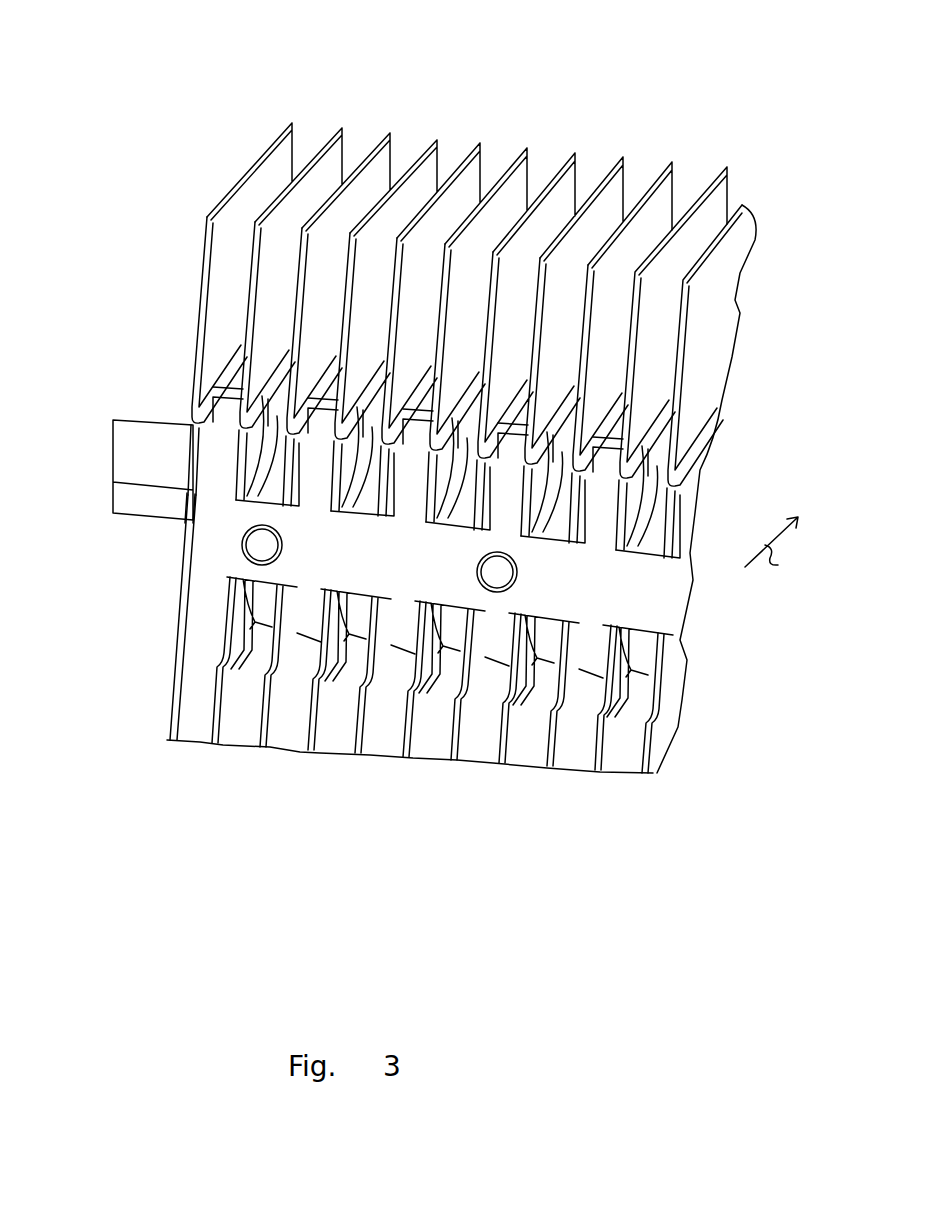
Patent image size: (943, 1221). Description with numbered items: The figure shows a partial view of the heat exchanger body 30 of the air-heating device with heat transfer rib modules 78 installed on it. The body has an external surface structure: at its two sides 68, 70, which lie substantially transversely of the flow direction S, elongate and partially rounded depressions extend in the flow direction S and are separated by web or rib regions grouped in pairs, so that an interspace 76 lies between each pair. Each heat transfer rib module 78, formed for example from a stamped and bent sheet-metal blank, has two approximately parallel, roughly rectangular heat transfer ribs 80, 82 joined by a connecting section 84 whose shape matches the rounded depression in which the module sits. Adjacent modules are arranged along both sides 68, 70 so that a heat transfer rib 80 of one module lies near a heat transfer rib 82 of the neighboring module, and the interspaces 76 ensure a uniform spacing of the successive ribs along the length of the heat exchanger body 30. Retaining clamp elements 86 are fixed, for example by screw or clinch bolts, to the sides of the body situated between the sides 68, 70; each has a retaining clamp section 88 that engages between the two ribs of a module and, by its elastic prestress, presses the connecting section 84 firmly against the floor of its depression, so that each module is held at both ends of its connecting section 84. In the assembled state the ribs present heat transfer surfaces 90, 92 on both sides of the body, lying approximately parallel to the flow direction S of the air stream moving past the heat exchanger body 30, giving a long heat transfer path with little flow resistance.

The heat exchanger body 30 is at (248, 503).
The side of the heat exchanger body 68 is at (761, 382).
The side of the heat exchanger body 70 is at (723, 745).
The interspace 76 is at (258, 522).
The heat transfer rib module 78 is at (221, 318).
The heat transfer rib 80 is at (232, 185).
The heat transfer rib 82 is at (342, 127).
The connecting section 84 is at (240, 378).
The retaining clamp element 86 is at (667, 577).
The retaining clamp section 88 is at (693, 450).
The heat transfer surface 90 is at (738, 180).
The heat transfer surface 92 is at (708, 212).
The flow direction S is at (771, 563).